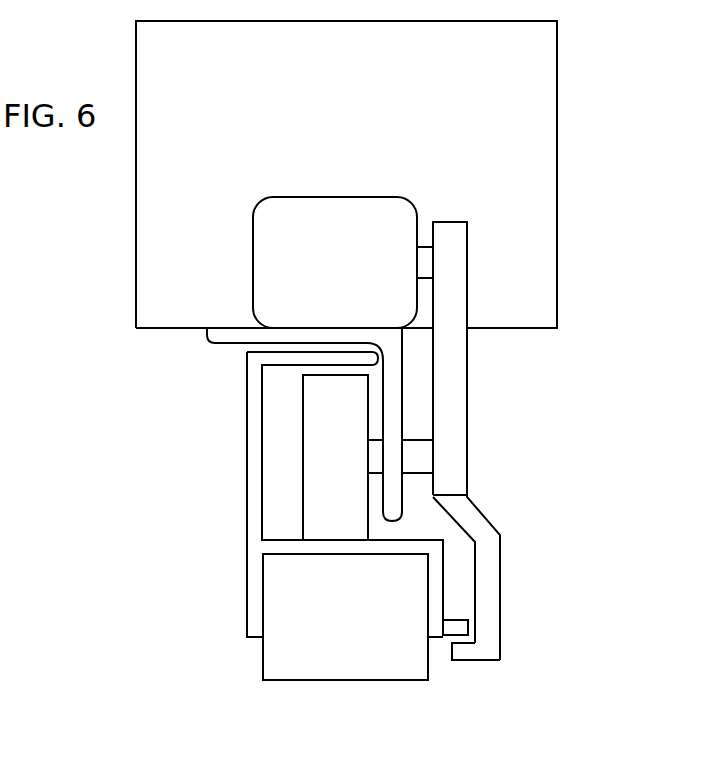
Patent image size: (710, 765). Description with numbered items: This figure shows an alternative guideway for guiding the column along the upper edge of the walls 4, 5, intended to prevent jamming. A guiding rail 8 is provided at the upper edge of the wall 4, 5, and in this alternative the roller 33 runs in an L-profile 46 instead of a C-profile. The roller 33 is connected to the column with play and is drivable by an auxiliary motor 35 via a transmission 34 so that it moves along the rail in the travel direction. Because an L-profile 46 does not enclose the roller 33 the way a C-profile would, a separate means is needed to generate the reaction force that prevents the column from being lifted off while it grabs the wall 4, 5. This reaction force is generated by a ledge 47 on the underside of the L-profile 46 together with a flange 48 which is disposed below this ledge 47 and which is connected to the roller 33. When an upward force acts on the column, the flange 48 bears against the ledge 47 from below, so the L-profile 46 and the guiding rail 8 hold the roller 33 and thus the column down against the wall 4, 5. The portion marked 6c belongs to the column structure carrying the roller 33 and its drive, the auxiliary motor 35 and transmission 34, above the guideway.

The housing 6c is at (530, 110).
The auxiliary motor 35 is at (377, 298).
The transmission 34 is at (453, 393).
The flange 48 is at (512, 650).
The L-profile 46 is at (257, 398).
The guiding rail 8 is at (257, 585).
The roller 33 is at (318, 452).
The wall 4 is at (345, 656).
The wall 5 is at (342, 652).
The ledge 47 is at (460, 627).